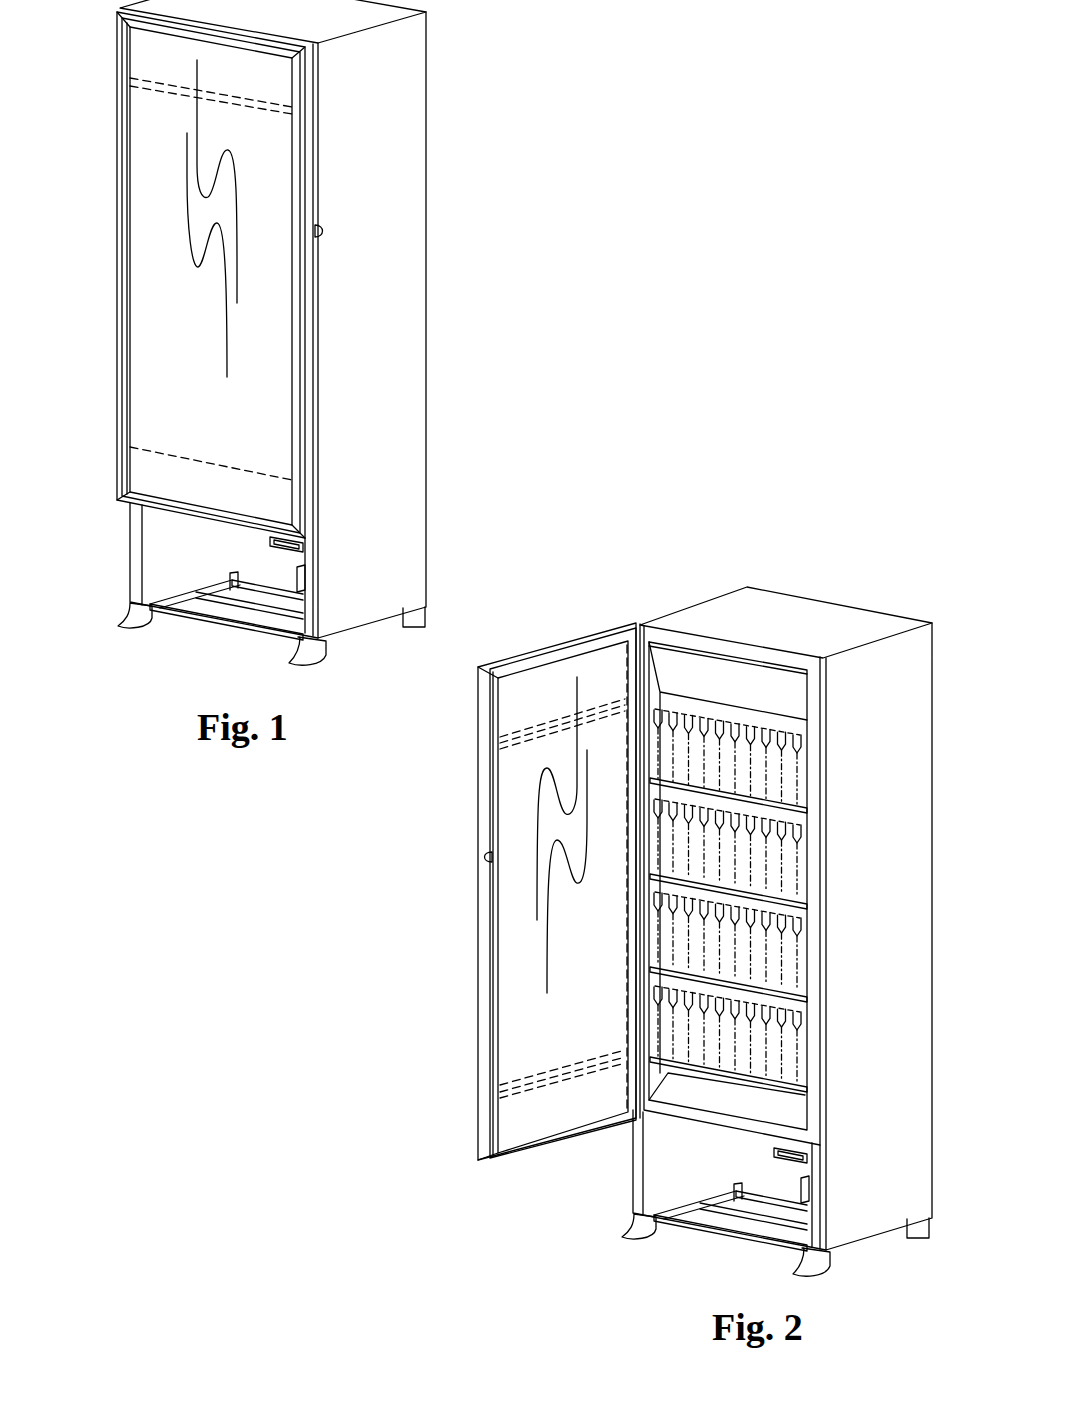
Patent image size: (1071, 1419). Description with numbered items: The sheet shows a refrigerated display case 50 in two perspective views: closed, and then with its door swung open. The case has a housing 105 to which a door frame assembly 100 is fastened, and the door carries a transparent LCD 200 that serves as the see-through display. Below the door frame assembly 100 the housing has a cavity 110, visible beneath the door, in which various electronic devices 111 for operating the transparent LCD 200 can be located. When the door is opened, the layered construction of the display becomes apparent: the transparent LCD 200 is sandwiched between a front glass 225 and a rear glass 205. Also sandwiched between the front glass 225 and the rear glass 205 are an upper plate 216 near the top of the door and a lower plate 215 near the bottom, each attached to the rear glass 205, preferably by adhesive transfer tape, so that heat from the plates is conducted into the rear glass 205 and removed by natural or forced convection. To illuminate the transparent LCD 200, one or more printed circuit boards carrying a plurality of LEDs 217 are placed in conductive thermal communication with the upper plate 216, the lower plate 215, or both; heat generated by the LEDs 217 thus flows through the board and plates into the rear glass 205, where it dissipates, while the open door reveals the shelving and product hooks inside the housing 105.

In FIG. 1, the refrigerated display case 50 is at (540, 72).
In FIG. 2, the refrigerated display case 50 is at (803, 520).
In FIG. 1, the door frame assembly 100 is at (308, 150).
In FIG. 2, the door frame assembly 100 is at (673, 635).
In FIG. 1, the housing 105 is at (415, 52).
In FIG. 2, the housing 105 is at (828, 620).
In FIG. 1, the cavity 110 is at (180, 573).
In FIG. 2, the cavity 110 is at (693, 1178).
In FIG. 1, the electronic devices 111 is at (282, 548).
In FIG. 2, the electronic devices 111 is at (790, 1160).
In FIG. 1, the transparent LCD 200 is at (158, 142).
In FIG. 2, the transparent LCD 200 is at (521, 880).
In FIG. 2, the rear glass 205 is at (527, 1010).
In FIG. 1, the lower plate 215 is at (143, 482).
In FIG. 2, the lower plate 215 is at (527, 1111).
In FIG. 1, the upper plate 216 is at (143, 55).
In FIG. 2, the upper plate 216 is at (524, 689).
In FIG. 2, the LEDs 217 is at (526, 739).
In FIG. 1, the front glass 225 is at (145, 172).